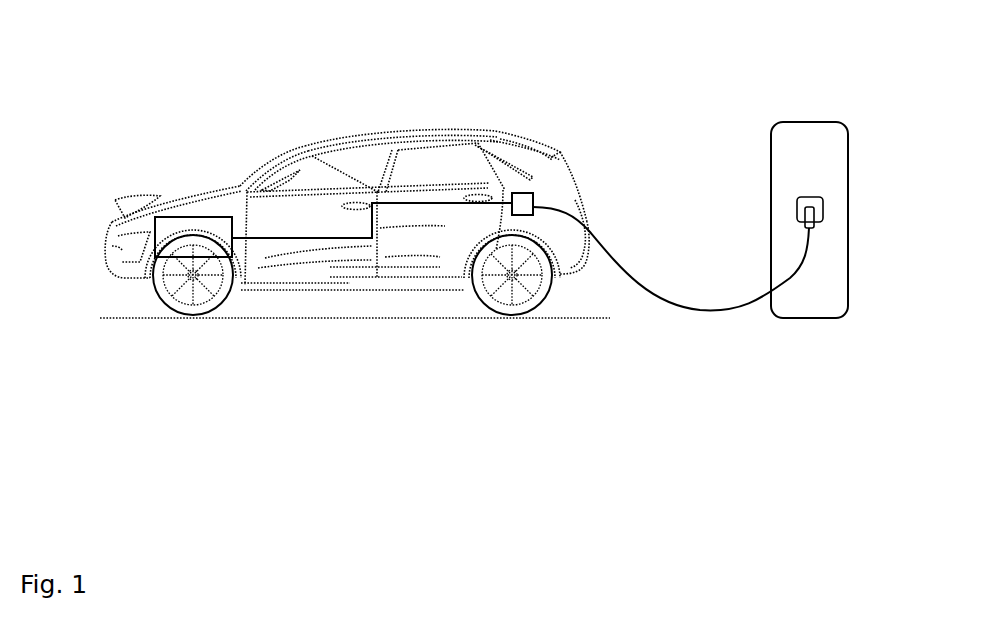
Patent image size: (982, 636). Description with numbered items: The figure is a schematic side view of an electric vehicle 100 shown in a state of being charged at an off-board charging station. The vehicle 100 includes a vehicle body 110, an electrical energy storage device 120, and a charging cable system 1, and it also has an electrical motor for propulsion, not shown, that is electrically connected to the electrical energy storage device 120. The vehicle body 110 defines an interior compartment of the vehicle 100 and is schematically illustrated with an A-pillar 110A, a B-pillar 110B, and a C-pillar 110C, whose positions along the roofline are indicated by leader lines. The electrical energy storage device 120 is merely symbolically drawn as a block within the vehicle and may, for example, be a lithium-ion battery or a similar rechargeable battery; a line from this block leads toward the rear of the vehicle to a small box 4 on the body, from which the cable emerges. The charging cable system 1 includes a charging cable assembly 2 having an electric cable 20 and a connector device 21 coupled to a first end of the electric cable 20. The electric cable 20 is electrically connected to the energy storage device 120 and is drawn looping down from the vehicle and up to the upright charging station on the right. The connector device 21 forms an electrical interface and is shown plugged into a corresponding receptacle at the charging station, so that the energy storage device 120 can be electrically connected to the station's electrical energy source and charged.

The electric vehicle 100 is at (229, 102).
The vehicle body 110 is at (487, 147).
The A-pillar 110A is at (288, 150).
The B-pillar 110B is at (392, 150).
The C-pillar 110C is at (520, 153).
The electrical energy storage device 120 is at (209, 249).
The charging inlet 4 is at (537, 196).
The charging cable system 1 is at (632, 204).
The charging cable assembly 2 is at (684, 254).
The electric cable 20 is at (685, 311).
The connector device 21 is at (815, 222).